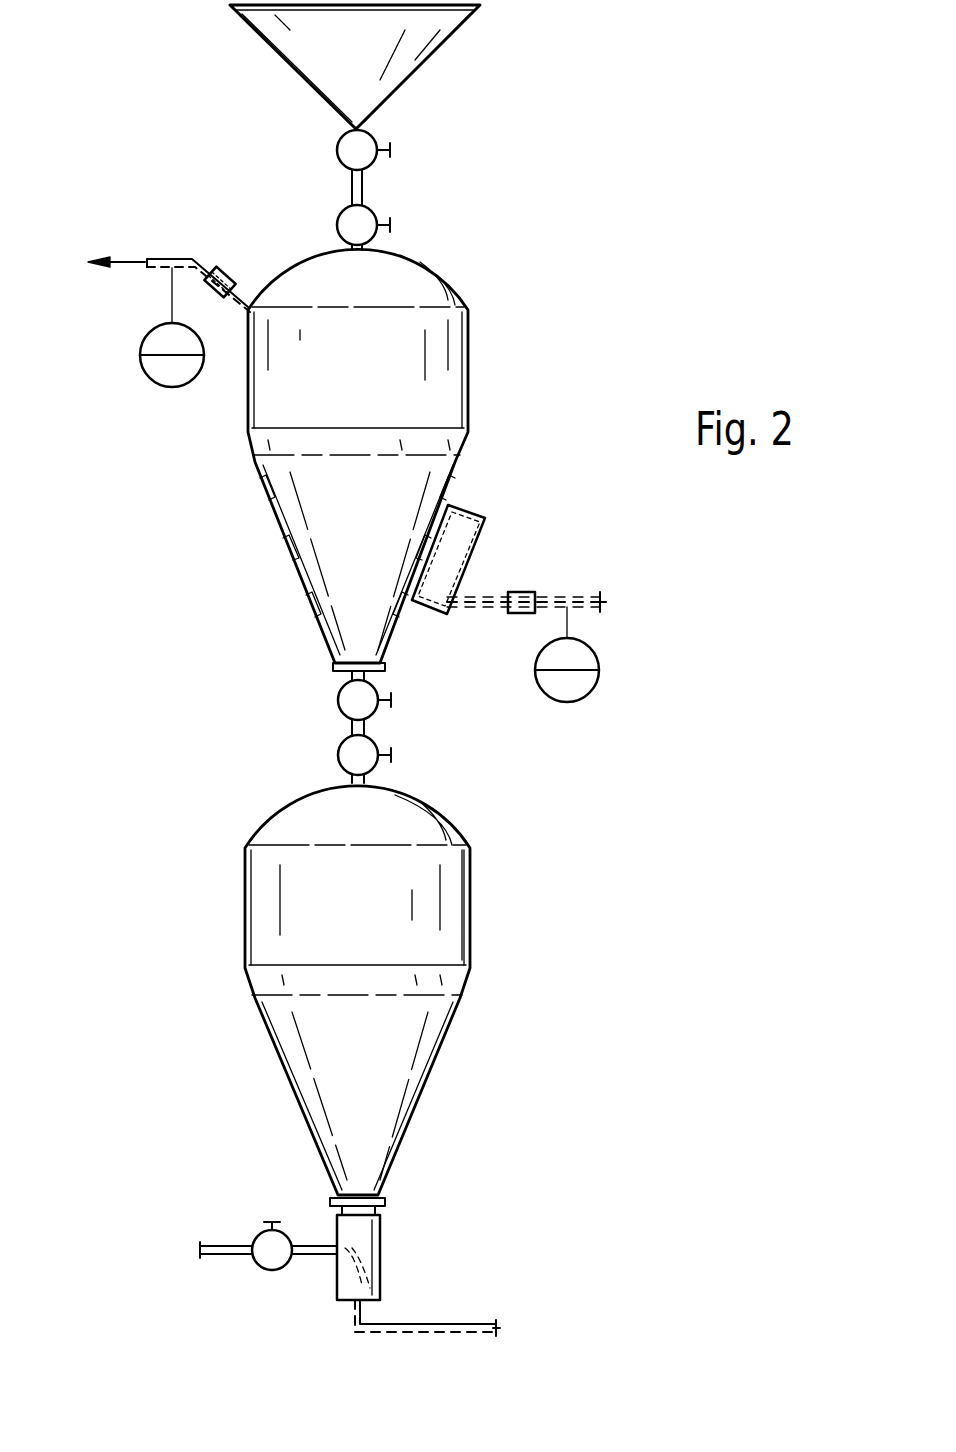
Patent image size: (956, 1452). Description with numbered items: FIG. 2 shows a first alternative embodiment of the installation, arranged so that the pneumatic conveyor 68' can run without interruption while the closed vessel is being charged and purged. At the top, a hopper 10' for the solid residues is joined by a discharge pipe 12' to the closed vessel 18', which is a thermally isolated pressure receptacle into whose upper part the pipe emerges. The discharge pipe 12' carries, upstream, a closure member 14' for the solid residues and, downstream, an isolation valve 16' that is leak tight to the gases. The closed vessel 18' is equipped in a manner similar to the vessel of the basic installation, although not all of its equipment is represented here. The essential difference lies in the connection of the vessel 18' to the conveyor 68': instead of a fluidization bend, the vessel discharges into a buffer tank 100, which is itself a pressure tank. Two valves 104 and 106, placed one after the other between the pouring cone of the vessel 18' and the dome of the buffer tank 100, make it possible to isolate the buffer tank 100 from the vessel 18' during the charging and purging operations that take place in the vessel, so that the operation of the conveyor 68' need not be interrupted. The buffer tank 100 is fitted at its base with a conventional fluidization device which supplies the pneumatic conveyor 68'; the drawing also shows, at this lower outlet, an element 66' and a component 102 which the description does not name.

The hopper 10' is at (389, 66).
The closure member 14' is at (416, 138).
The discharge pipe 12' is at (418, 181).
The isolation valve 16' is at (404, 230).
The closed vessel 18' is at (363, 458).
The valve 104 is at (372, 695).
The valve 106 is at (378, 745).
The buffer tank 100 is at (485, 938).
The pneumatic conveyor 68' is at (290, 1185).
The discharge control valve 66' is at (271, 1277).
The discharge chamber 102 is at (394, 1262).